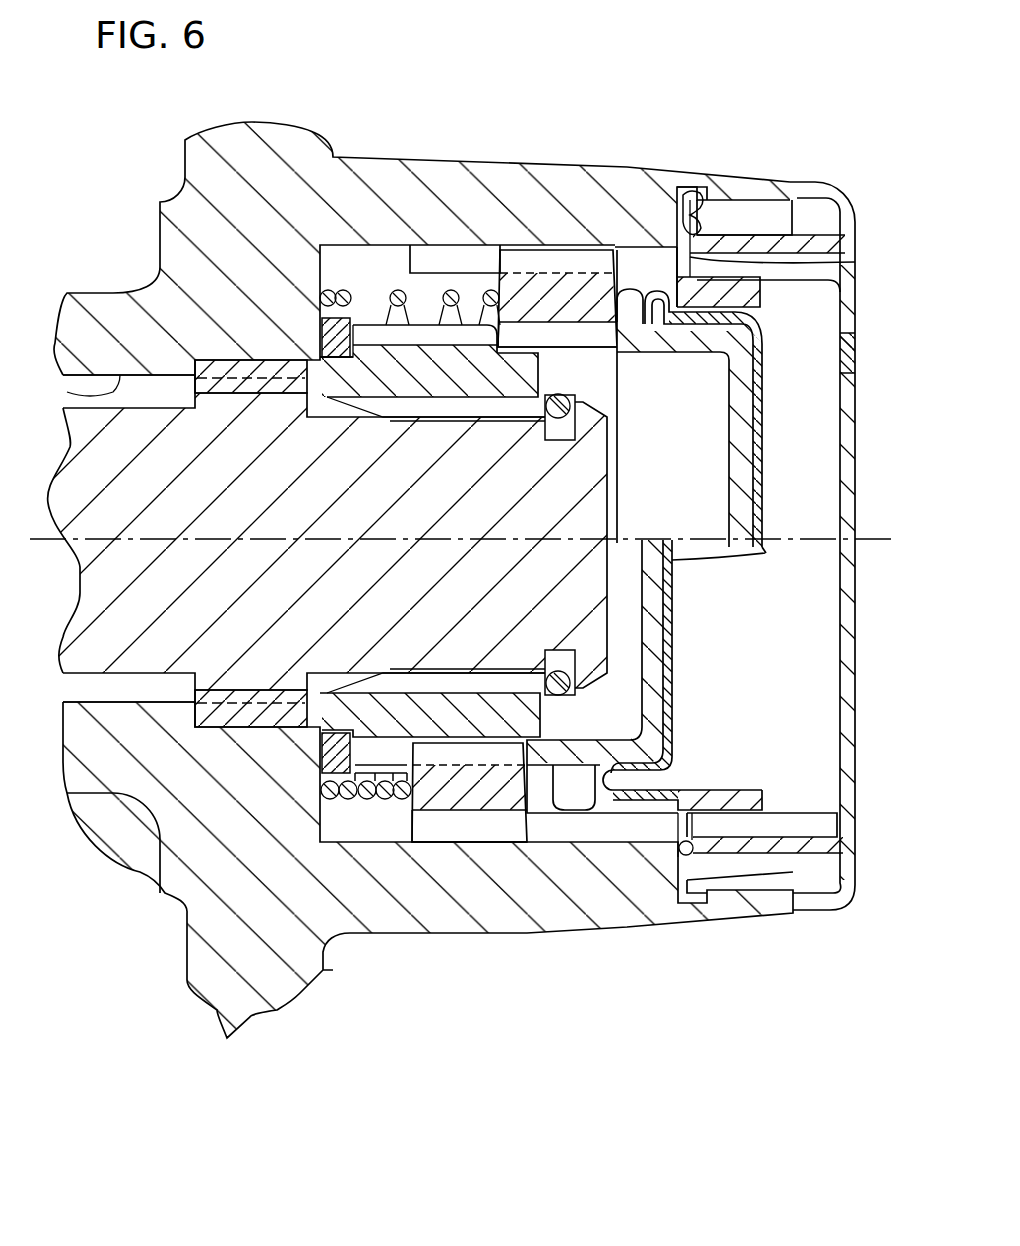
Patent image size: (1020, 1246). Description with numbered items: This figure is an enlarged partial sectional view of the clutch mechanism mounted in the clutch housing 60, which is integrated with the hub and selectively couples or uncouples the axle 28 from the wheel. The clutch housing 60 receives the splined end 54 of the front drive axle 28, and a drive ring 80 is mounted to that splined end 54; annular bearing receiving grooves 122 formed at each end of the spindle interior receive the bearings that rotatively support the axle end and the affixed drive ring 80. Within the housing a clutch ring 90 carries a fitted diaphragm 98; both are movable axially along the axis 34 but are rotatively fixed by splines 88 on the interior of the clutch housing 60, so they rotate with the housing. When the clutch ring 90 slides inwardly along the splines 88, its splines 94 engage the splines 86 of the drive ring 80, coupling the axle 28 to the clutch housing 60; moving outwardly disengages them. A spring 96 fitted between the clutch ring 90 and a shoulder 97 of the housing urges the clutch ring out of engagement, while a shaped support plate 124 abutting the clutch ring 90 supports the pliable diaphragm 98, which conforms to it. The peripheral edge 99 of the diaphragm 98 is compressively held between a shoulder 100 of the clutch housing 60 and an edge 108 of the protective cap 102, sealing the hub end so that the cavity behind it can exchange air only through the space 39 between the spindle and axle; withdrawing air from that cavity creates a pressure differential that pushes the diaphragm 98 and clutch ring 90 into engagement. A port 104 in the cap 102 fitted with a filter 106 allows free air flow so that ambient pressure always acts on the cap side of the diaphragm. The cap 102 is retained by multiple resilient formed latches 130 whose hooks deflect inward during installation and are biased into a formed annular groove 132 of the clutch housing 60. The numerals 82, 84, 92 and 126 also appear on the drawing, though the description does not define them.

The axle 28 is at (127, 615).
The axis 34 is at (345, 537).
The space 39 is at (72, 392).
The splined end 54 is at (348, 673).
The clutch housing 60 is at (497, 160).
The drive ring 80 is at (460, 378).
The rotor portion 82 is at (407, 680).
The bearing 84 is at (563, 418).
The splines 86 is at (373, 323).
The splines 88 is at (453, 260).
The clutch ring 90 is at (542, 313).
The friction member 92 is at (547, 263).
The splines 94 is at (573, 338).
The spring 96 is at (362, 290).
The shoulder 97 is at (335, 258).
The diaphragm 98 is at (764, 468).
The peripheral edge 99 is at (857, 263).
The shoulder 100 is at (677, 208).
The protective cap 102 is at (841, 183).
The port 104 is at (858, 353).
The filter 106 is at (850, 343).
The edge 108 is at (683, 227).
The annular bearing receiving grooves 122 is at (258, 395).
The shaped support plate 124 is at (630, 287).
The liner 126 is at (655, 660).
The formed latches 130 is at (737, 207).
The annular groove 132 is at (683, 210).